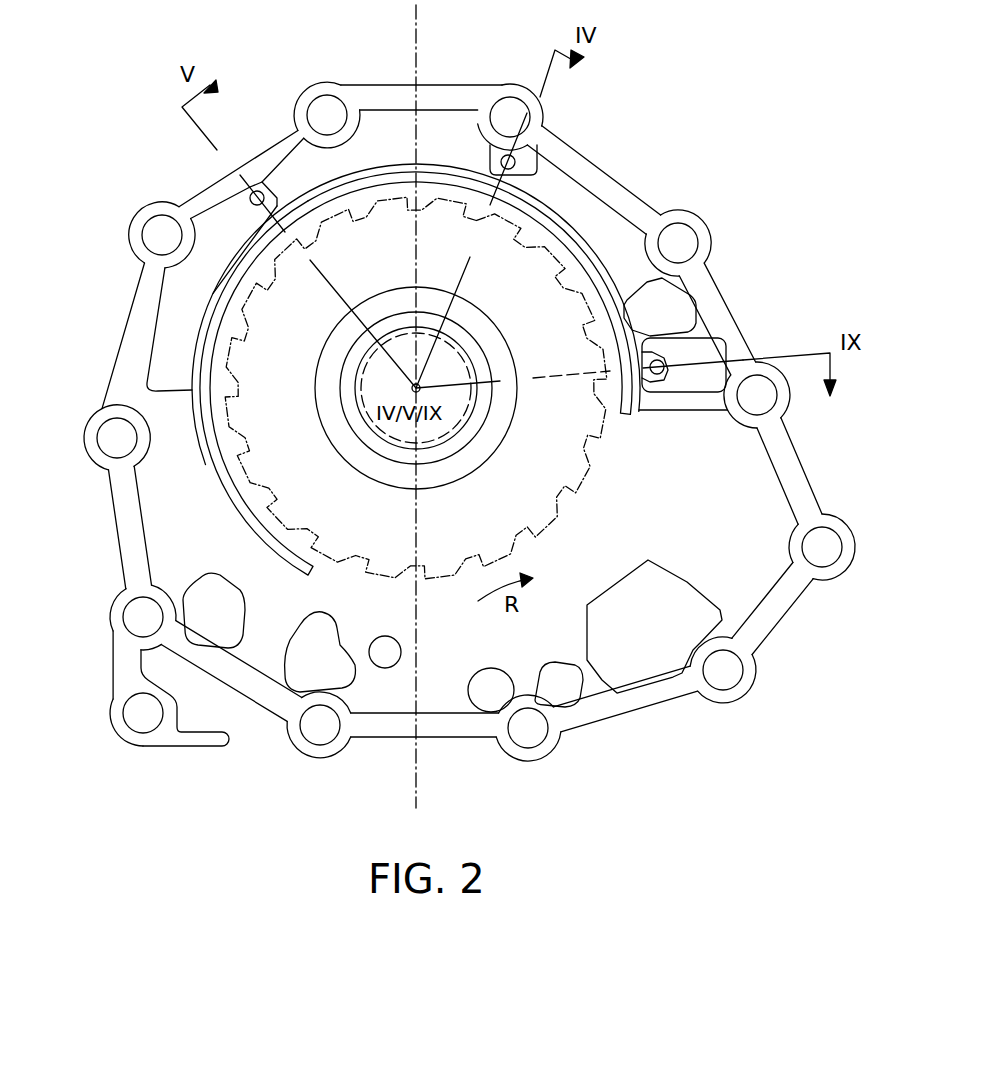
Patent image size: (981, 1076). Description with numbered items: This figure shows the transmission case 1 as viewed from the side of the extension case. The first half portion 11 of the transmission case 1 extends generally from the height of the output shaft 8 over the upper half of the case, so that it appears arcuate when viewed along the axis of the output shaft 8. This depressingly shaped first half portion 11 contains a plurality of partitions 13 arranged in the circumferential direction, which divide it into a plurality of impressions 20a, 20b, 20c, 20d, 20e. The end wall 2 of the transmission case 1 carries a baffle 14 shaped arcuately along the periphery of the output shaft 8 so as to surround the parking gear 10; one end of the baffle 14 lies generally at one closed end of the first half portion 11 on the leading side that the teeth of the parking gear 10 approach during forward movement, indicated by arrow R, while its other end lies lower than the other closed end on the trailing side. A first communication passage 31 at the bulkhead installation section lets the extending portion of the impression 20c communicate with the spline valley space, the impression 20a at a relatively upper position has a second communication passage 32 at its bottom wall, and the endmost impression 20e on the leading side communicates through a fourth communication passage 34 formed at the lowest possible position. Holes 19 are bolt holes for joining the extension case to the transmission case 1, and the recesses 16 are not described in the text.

The transmission case 1 is at (720, 216).
The end wall 2 is at (760, 493).
The output shaft 8 is at (450, 430).
The parking gear 10 is at (547, 527).
The first half portion 11 is at (622, 228).
The partitions 13 is at (277, 187).
The baffle 14 is at (257, 517).
The housing recess 16 is at (293, 673).
The bolt holes 19 is at (162, 235).
The impression 20a is at (172, 315).
The impression 20b is at (383, 133).
The impression 20c is at (622, 230).
The impression 20d is at (667, 293).
The impression 20e is at (697, 375).
The first communication passage 31 is at (516, 163).
The second communication passage 32 is at (257, 198).
The fourth communication passage 34 is at (658, 375).